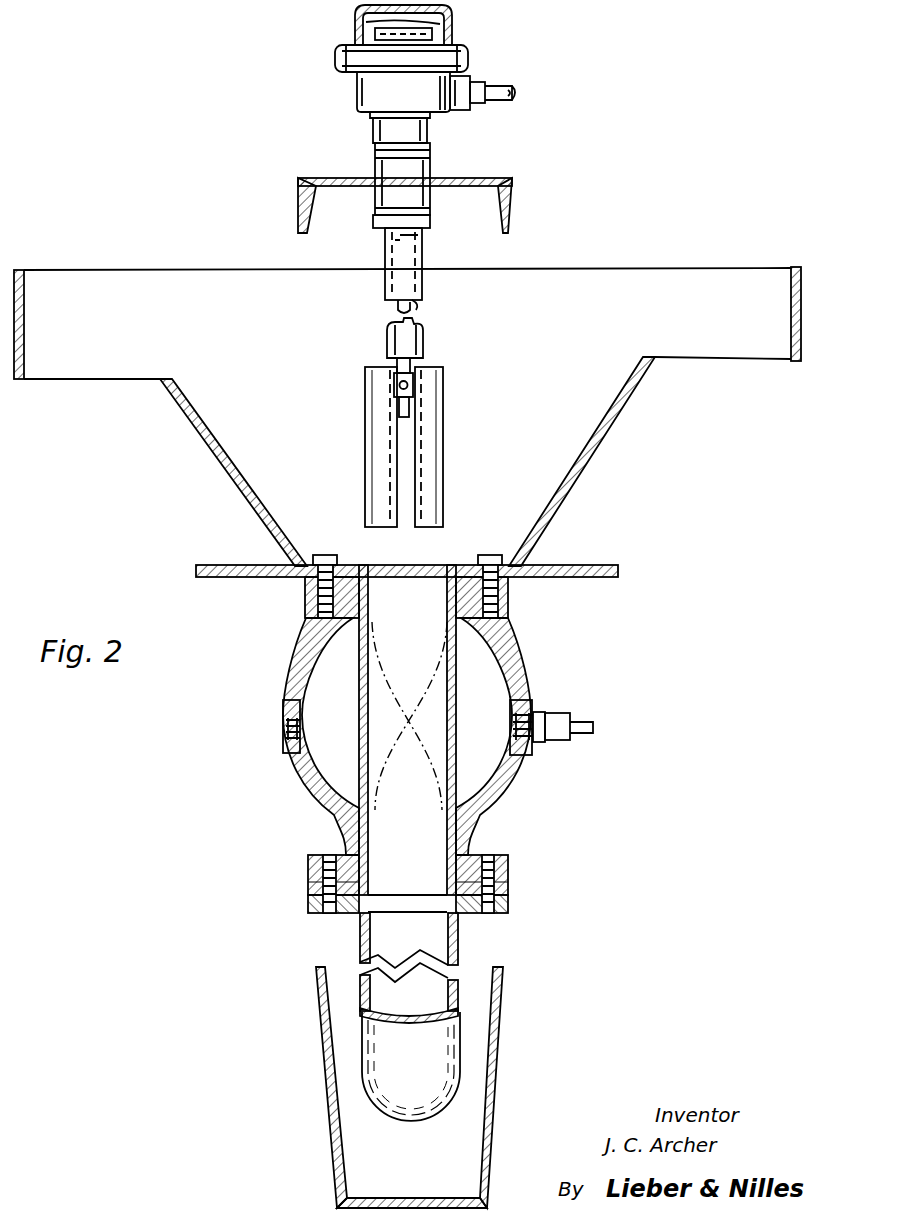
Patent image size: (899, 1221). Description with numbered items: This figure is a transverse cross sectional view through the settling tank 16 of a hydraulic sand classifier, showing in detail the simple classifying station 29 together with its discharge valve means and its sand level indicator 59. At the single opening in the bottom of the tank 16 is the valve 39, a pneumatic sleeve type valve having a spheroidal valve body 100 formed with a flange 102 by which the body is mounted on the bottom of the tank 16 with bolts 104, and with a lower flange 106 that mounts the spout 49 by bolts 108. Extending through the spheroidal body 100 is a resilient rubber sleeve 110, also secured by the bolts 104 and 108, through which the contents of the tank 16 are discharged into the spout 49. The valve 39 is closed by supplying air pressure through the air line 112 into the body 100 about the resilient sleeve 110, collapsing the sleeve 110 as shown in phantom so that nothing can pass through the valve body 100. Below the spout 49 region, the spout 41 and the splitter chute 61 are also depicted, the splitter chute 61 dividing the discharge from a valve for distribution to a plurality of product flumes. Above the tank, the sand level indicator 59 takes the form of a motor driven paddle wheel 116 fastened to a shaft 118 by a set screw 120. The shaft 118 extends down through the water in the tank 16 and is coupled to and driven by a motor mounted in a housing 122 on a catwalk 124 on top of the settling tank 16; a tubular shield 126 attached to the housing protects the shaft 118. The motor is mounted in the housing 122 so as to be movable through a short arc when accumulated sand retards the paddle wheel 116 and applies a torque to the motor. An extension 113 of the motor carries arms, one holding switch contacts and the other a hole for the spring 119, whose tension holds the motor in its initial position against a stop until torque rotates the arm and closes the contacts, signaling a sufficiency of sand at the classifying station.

The settling tank 16 is at (596, 410).
The classifying station 29 is at (452, 559).
The valve 39 is at (431, 736).
The spout 41 is at (384, 1074).
The spout 49 is at (471, 948).
The sand level indicator 59 is at (376, 347).
The splitter chute 61 is at (334, 1130).
The spheroidal valve body 100 is at (524, 694).
The flange 102 is at (508, 608).
The bolts 104 is at (335, 545).
The flange 106 is at (508, 866).
The bolts 108 is at (494, 856).
The resilient rubber sleeve 110 is at (388, 592).
The air line 112 is at (586, 728).
The extension 113 is at (428, 30).
The paddle wheel 116 is at (440, 452).
The shaft 118 is at (412, 306).
The spring 119 is at (398, 22).
The set screw 120 is at (410, 386).
The housing 122 is at (453, 28).
The catwalk 124 is at (470, 180).
The tubular shield 126 is at (420, 258).